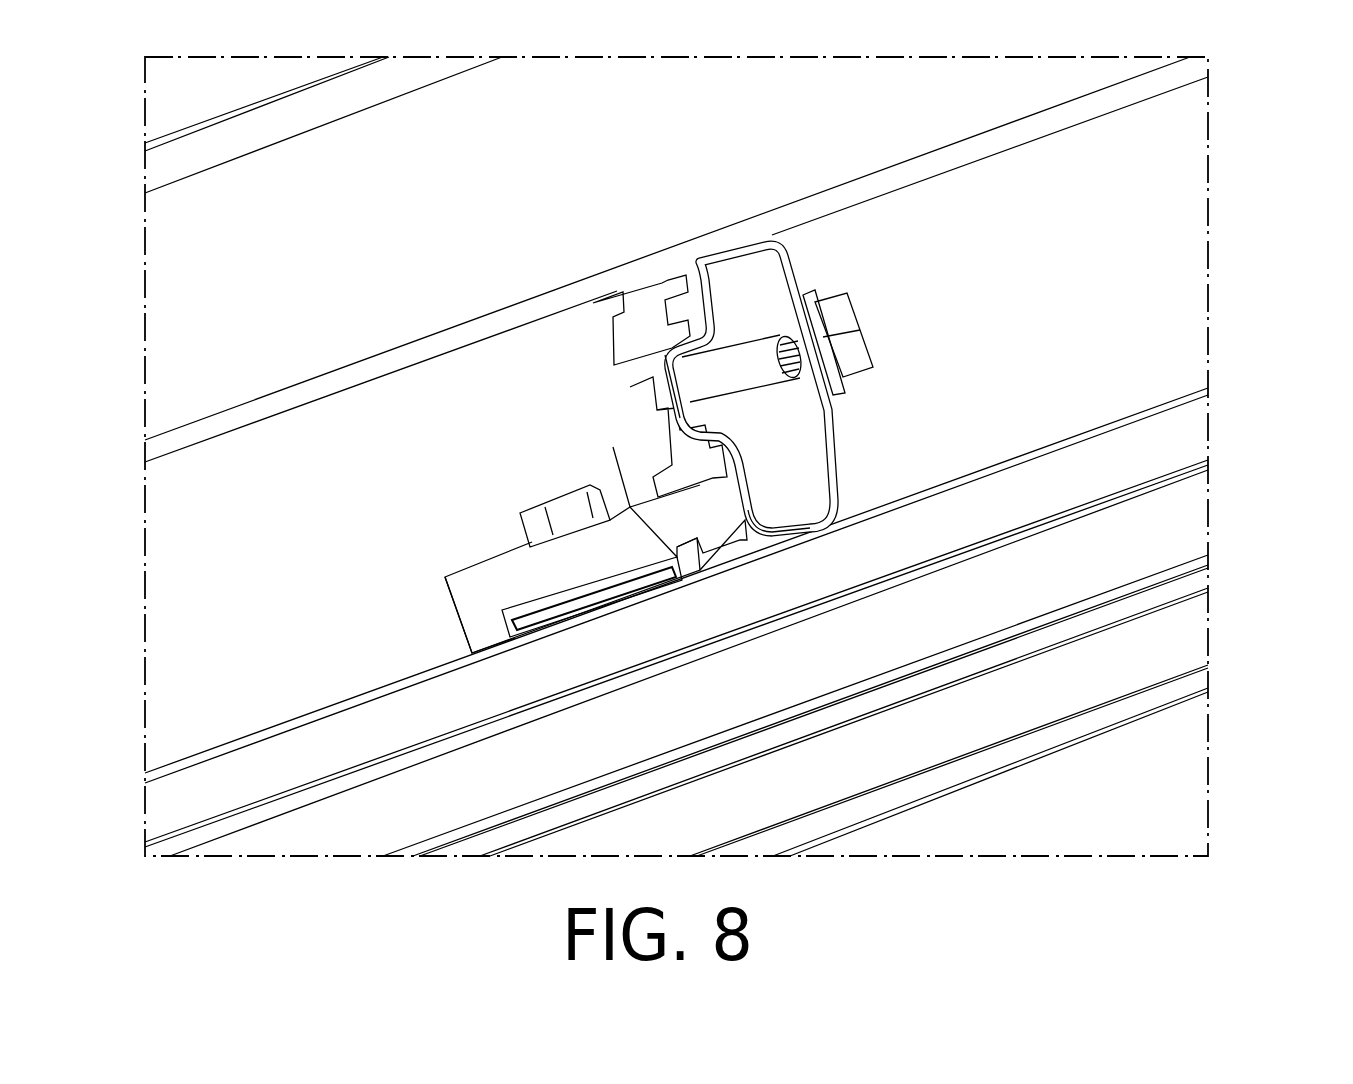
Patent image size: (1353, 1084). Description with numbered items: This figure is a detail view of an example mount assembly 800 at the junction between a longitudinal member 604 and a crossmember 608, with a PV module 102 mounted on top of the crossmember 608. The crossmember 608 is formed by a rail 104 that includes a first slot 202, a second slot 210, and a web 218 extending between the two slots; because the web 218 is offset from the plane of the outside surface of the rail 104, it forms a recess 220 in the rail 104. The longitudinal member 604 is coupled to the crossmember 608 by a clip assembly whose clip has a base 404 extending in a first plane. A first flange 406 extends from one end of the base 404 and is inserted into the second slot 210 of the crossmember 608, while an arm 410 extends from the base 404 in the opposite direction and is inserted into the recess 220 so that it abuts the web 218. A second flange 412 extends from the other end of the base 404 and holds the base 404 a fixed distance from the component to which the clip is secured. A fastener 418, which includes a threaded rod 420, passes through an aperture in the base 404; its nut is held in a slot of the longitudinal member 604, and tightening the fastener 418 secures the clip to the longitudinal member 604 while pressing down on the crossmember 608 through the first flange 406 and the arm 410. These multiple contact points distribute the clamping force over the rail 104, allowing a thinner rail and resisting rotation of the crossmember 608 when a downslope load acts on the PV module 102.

The mount assembly 800 is at (1258, 77).
The PV module 102 is at (175, 272).
The rail 104 is at (668, 570).
The first slot 202 is at (668, 337).
The second slot 210 is at (743, 503).
The web 218 is at (675, 395).
The recess 220 is at (590, 370).
The base 404 is at (515, 566).
The first flange 406 is at (715, 523).
The arm 410 is at (622, 441).
The second flange 412 is at (480, 628).
The fastener 418 is at (540, 520).
The threaded rod 420 is at (533, 622).
The longitudinal member 604 is at (213, 778).
The crossmember 608 is at (707, 381).